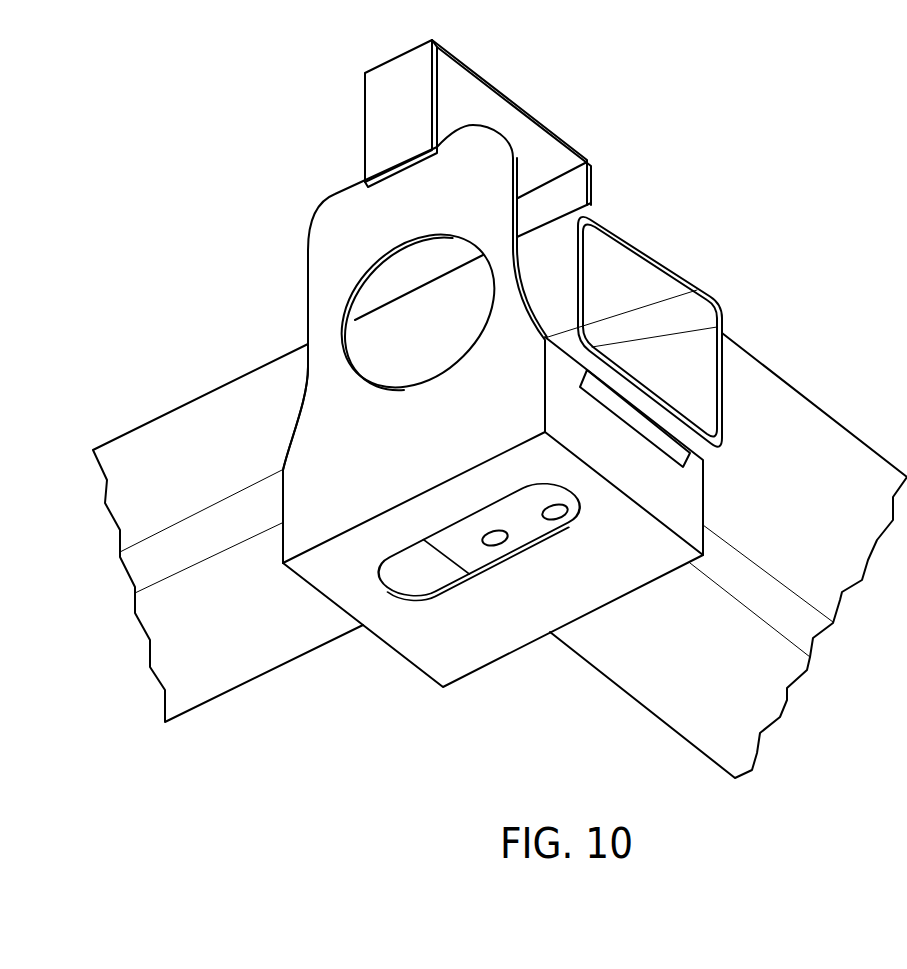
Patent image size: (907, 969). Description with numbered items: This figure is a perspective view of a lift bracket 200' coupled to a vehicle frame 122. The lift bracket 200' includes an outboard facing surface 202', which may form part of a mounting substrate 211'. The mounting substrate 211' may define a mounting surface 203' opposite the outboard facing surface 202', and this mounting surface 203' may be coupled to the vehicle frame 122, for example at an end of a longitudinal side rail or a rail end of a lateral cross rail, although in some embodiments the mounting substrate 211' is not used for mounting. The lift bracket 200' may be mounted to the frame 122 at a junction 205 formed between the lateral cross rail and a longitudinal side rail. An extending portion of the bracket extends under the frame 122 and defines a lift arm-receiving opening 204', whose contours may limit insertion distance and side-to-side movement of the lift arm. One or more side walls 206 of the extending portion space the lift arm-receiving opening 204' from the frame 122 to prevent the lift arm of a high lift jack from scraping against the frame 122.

The vehicle frame 122 is at (812, 388).
The lift bracket 200' is at (472, 373).
The outboard facing surface 202' is at (415, 344).
The mounting substrate 211' is at (247, 391).
The mounting surface 203' is at (573, 179).
The lift arm-receiving opening 204' is at (452, 451).
The junction 205 is at (702, 225).
The side walls 206 is at (703, 497).